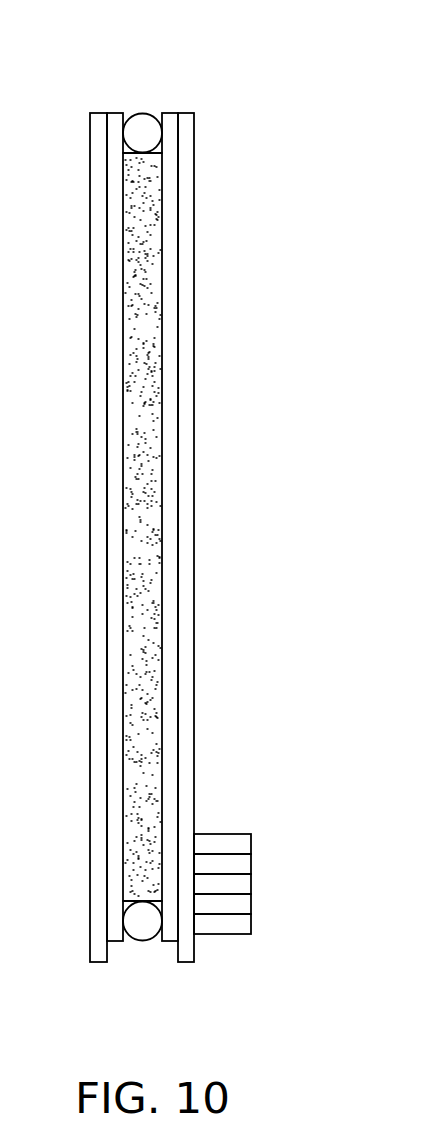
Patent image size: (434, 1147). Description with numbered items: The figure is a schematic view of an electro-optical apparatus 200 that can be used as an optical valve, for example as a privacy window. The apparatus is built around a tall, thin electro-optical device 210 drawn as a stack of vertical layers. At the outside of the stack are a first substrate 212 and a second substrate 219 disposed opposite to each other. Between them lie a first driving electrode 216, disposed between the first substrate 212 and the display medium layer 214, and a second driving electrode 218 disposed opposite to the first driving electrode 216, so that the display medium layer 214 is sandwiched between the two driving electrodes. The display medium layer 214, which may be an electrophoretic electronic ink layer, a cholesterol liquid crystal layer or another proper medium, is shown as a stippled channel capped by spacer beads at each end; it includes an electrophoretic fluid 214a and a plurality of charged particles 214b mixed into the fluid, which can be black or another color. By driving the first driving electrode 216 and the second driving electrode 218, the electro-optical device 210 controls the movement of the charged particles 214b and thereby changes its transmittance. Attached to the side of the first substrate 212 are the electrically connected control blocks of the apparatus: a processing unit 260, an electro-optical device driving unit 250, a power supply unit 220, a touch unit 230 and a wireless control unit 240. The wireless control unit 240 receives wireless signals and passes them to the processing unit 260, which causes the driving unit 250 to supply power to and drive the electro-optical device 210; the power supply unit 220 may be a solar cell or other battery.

The electro-optical apparatus 200 is at (298, 1028).
The electro-optical device 210 is at (235, 48).
The first substrate 212 is at (187, 132).
The display medium layer 214 is at (142, 153).
The electrophoretic fluid 214a is at (128, 878).
The charged particles 214b is at (123, 818).
The first driving electrode 216 is at (168, 128).
The second driving electrode 218 is at (113, 128).
The second substrate 219 is at (97, 132).
The power supply unit 220 is at (233, 885).
The touch unit 230 is at (237, 903).
The wireless control unit 240 is at (237, 923).
The electro-optical device driving unit 250 is at (237, 866).
The processing unit 260 is at (235, 847).